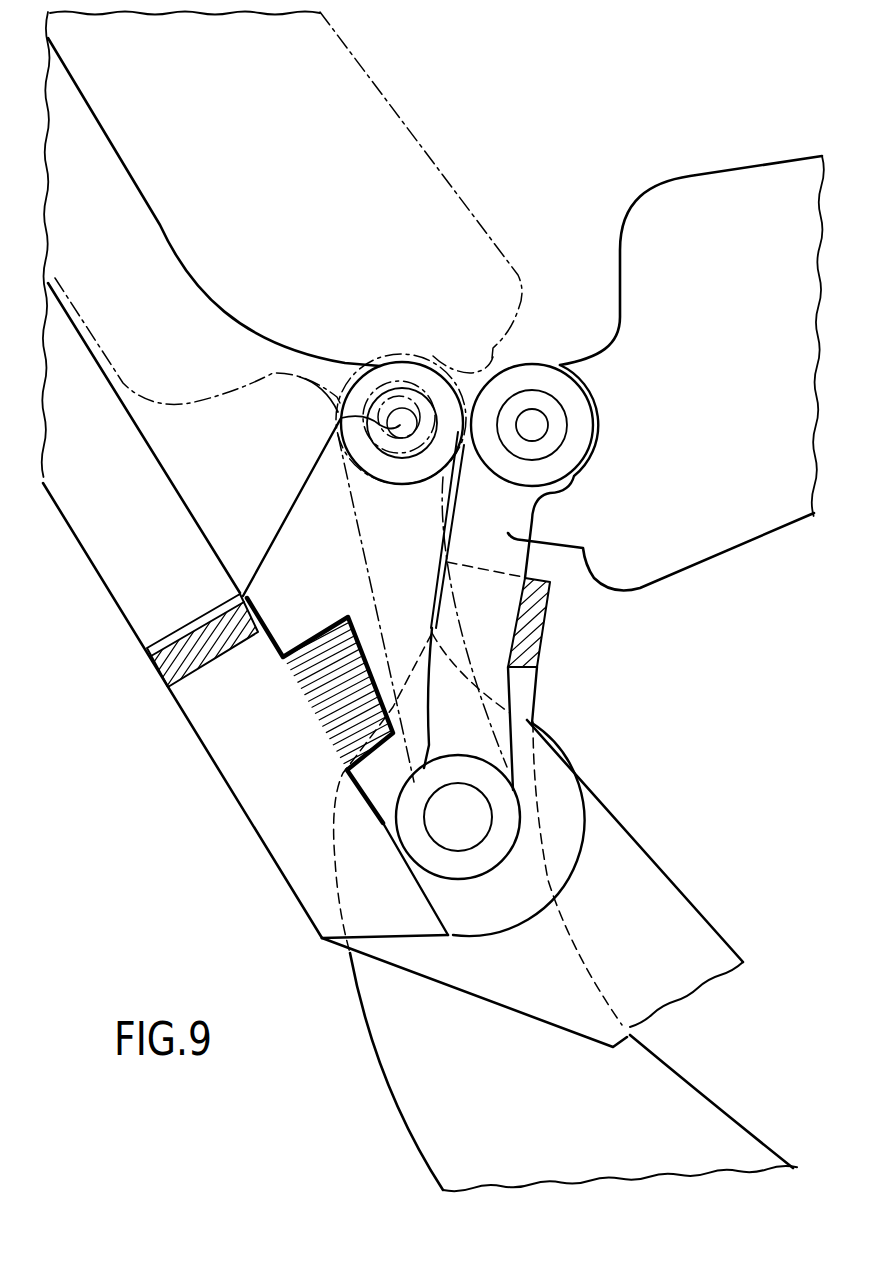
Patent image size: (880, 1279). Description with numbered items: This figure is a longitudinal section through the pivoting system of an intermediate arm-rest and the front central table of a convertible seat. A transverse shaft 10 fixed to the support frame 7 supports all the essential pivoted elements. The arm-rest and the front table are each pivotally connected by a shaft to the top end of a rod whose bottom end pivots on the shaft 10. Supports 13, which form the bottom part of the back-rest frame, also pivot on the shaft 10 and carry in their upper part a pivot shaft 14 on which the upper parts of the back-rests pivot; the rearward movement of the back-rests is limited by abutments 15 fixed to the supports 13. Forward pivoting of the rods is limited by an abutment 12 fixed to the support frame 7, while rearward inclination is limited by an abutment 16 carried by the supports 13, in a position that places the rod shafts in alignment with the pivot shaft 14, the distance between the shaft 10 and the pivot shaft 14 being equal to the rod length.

The pivot shaft 14 is at (340, 417).
The abutments 15 is at (163, 676).
The abutment 16 is at (338, 712).
The supports 13 is at (213, 707).
The abutment 12 is at (533, 627).
The transverse shaft 10 is at (467, 816).
The support frame 7 is at (518, 1106).